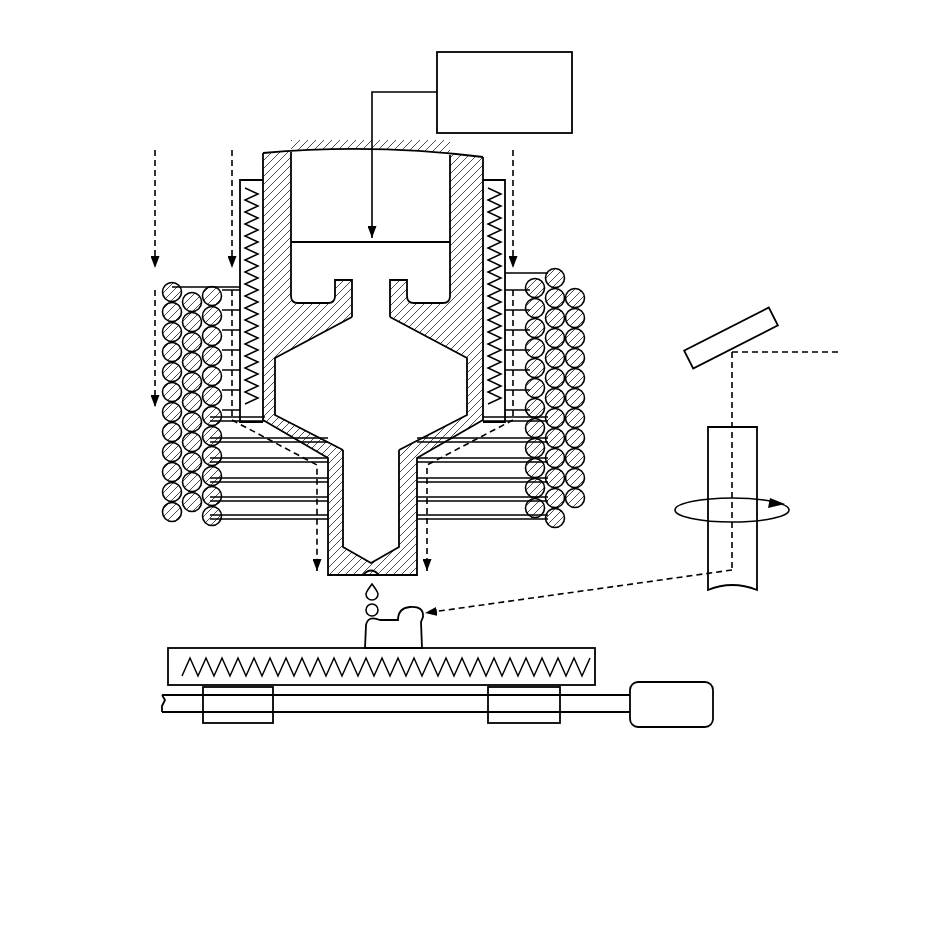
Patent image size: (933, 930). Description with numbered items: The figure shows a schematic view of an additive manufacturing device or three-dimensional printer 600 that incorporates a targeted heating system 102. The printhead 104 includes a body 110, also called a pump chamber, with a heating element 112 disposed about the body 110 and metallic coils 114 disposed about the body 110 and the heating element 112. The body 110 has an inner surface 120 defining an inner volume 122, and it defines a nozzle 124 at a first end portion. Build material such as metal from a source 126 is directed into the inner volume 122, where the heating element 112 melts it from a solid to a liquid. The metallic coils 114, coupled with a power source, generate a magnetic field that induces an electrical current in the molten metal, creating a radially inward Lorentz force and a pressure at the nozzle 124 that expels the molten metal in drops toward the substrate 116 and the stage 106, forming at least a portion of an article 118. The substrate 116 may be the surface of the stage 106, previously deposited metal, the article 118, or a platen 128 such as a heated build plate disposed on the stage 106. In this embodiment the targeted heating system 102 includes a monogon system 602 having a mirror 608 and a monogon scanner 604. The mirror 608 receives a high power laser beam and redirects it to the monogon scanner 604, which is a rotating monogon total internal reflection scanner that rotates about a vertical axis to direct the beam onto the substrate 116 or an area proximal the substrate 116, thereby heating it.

The 3D printer 600 is at (66, 130).
The targeted heating system 102 is at (812, 303).
The printhead 104 is at (130, 135).
The stage 106 is at (150, 706).
The body 110 is at (277, 146).
The heating element 112 is at (252, 178).
The metallic coils 114 is at (556, 266).
The substrate 116 is at (166, 644).
The article 118 is at (422, 643).
The inner surface 120 is at (448, 198).
The inner volume 122 is at (387, 397).
The nozzle 124 is at (421, 552).
The source 126 is at (518, 107).
The platen 128 is at (168, 672).
The monogon system 602 is at (860, 302).
The monogon scanner 604 is at (757, 575).
The mirror 608 is at (722, 330).